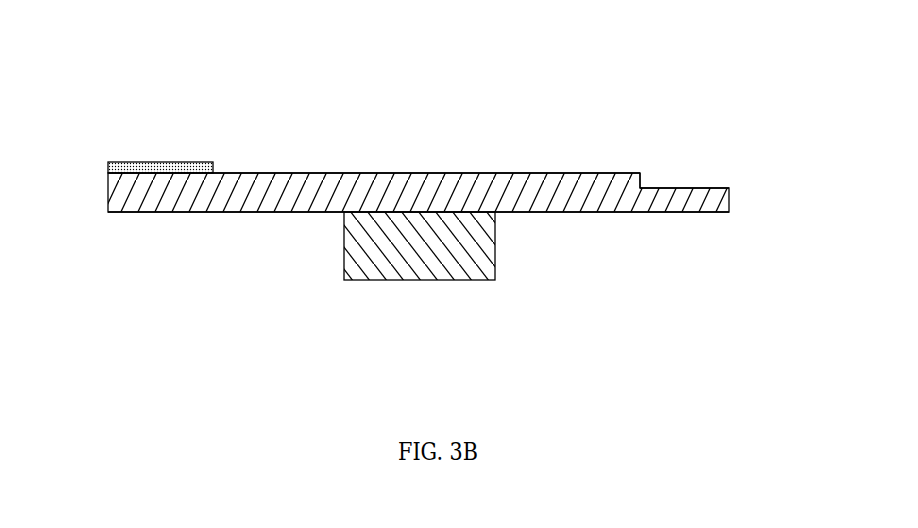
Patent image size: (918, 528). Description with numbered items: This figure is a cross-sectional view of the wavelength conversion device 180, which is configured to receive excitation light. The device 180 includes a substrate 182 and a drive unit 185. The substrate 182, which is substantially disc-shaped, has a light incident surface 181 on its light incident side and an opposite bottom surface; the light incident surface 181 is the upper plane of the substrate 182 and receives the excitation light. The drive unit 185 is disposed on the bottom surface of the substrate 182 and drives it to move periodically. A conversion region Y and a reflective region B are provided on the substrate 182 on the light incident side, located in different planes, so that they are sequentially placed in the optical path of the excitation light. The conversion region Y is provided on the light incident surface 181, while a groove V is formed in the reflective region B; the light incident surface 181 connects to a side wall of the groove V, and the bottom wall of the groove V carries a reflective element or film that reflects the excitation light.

The wavelength conversion device 180 is at (452, 92).
The light incident surface 181 is at (278, 173).
The substrate 182 is at (215, 213).
The drive unit 185 is at (440, 272).
The conversion region Y is at (150, 162).
The reflective region B is at (679, 188).
The groove V is at (701, 179).